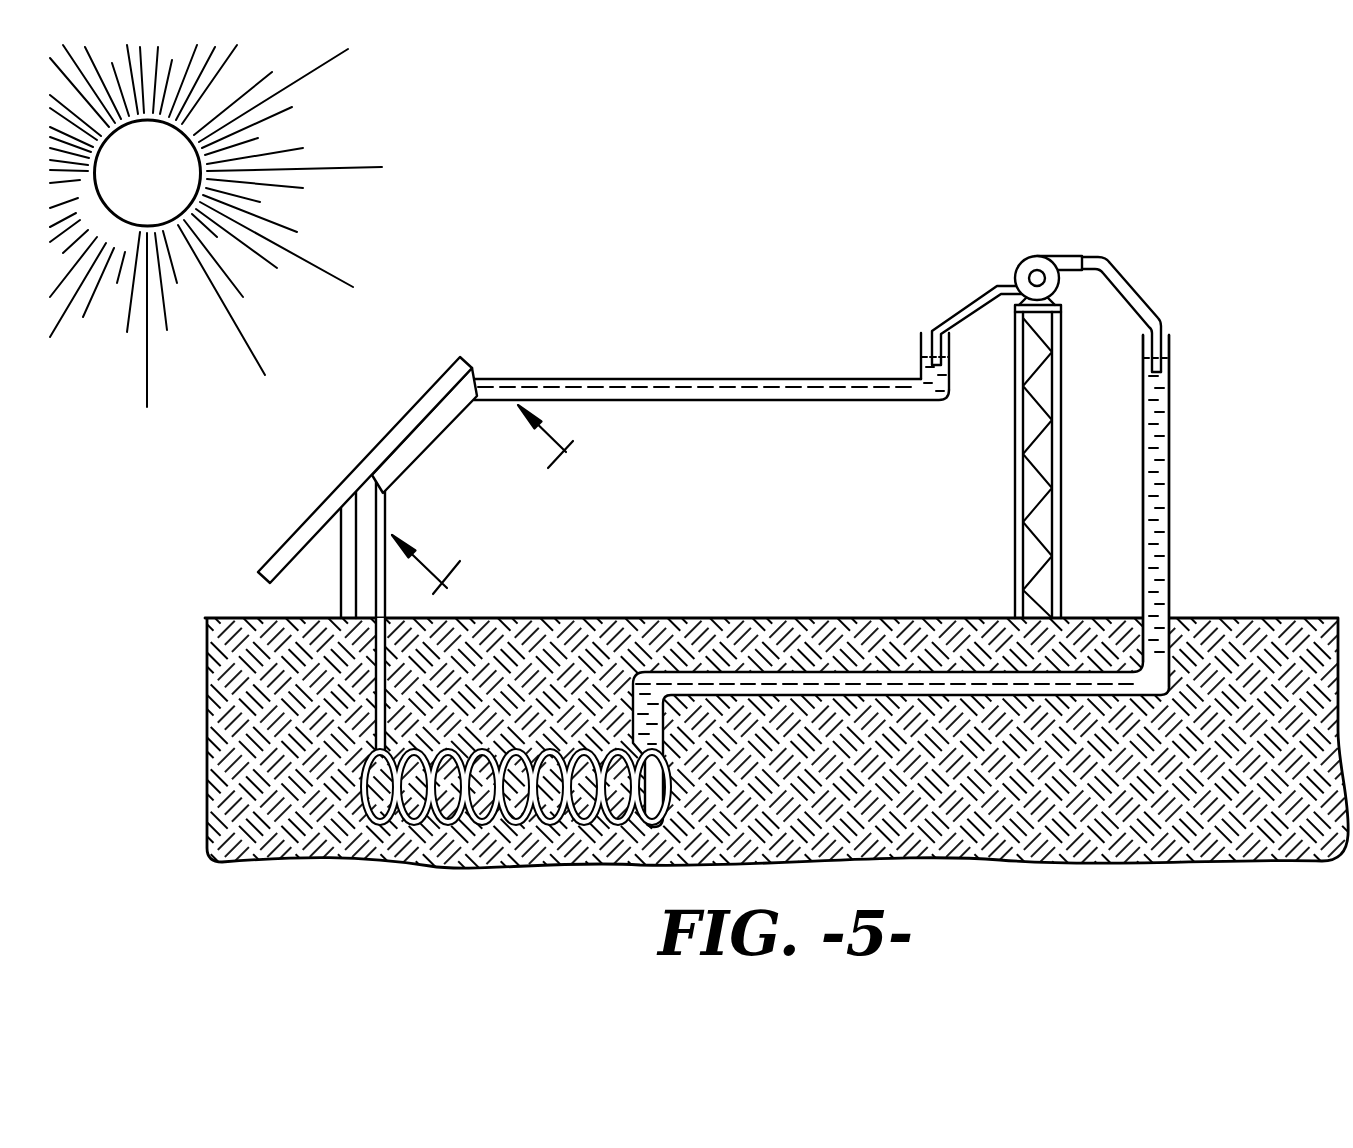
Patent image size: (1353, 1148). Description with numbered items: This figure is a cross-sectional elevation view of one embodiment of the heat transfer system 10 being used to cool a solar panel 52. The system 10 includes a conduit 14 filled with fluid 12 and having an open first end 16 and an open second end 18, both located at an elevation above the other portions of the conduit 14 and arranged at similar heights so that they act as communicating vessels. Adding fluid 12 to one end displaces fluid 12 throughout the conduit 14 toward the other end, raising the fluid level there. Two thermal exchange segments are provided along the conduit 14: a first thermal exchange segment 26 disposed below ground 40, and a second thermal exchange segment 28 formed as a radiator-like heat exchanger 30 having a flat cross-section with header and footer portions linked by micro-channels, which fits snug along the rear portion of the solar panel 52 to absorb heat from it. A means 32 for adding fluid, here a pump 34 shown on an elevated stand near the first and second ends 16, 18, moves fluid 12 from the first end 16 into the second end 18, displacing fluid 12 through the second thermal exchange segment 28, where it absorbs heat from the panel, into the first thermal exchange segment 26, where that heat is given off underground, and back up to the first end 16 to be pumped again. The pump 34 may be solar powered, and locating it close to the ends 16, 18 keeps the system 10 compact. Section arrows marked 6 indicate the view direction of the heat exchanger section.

The heat transfer system 10 is at (1224, 247).
The fluid 12 is at (715, 398).
The conduit 14 is at (608, 380).
The first end 16 is at (1173, 368).
The second end 18 is at (920, 362).
The first thermal exchange segment 26 is at (432, 822).
The second thermal exchange segment 28 is at (447, 427).
The heat exchanger 30 is at (410, 465).
The means for adding fluid 32 is at (1017, 268).
The pump 34 is at (1065, 255).
The ground / soil 40 is at (1243, 637).
The solar panel 52 is at (413, 418).
The section line 6-6 (view of FIG. 6) 6 is at (482, 499).